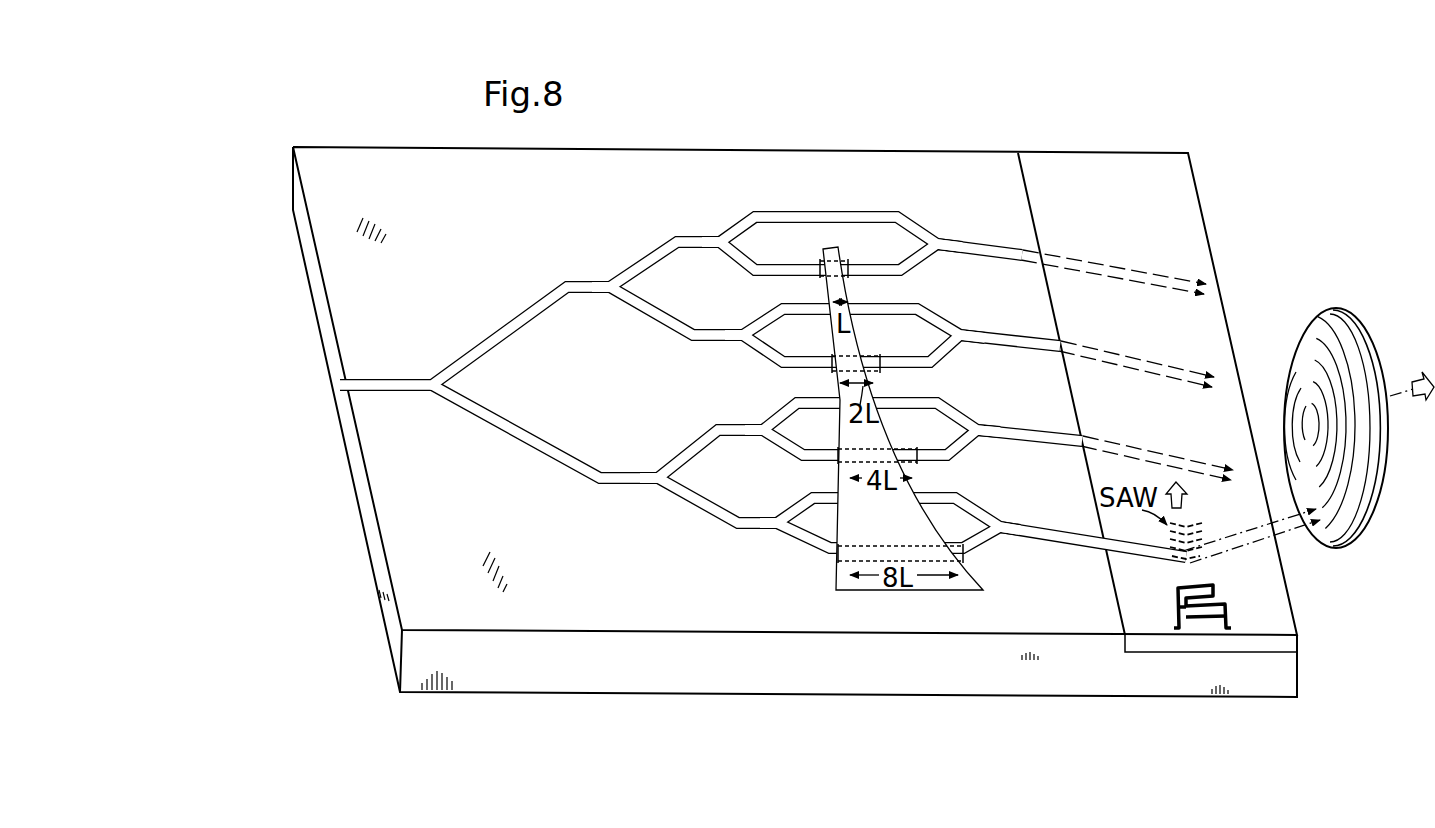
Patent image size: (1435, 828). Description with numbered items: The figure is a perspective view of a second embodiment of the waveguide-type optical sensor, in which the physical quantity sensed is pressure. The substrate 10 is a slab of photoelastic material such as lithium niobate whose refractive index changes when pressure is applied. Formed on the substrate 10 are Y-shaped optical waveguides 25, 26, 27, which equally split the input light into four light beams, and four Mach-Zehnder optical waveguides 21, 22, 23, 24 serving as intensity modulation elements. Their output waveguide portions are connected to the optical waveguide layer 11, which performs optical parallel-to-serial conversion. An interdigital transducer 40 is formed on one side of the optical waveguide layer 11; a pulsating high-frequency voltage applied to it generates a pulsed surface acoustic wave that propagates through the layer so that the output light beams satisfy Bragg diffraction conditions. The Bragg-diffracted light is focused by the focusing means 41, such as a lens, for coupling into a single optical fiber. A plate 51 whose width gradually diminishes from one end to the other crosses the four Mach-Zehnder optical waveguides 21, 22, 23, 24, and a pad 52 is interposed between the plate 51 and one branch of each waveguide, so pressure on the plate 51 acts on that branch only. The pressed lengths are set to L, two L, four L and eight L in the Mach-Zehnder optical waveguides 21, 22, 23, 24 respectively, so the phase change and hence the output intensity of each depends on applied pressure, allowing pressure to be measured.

The substrate 10 is at (1280, 690).
The optical waveguide layer 11 is at (1270, 648).
The Mach-Zehnder optical waveguide 21 is at (930, 223).
The Mach-Zehnder optical waveguide 22 is at (953, 326).
The Mach-Zehnder optical waveguide 23 is at (976, 420).
The Mach-Zehnder optical waveguide 24 is at (996, 507).
The Y-shaped optical waveguide 25 is at (431, 398).
The Y-shaped optical waveguide 26 is at (609, 278).
The Y-shaped optical waveguide 27 is at (652, 493).
The interdigital transducer 40 is at (1227, 605).
The focusing means 41 is at (1358, 524).
The plate 51 is at (880, 391).
The pad 52 is at (842, 262).